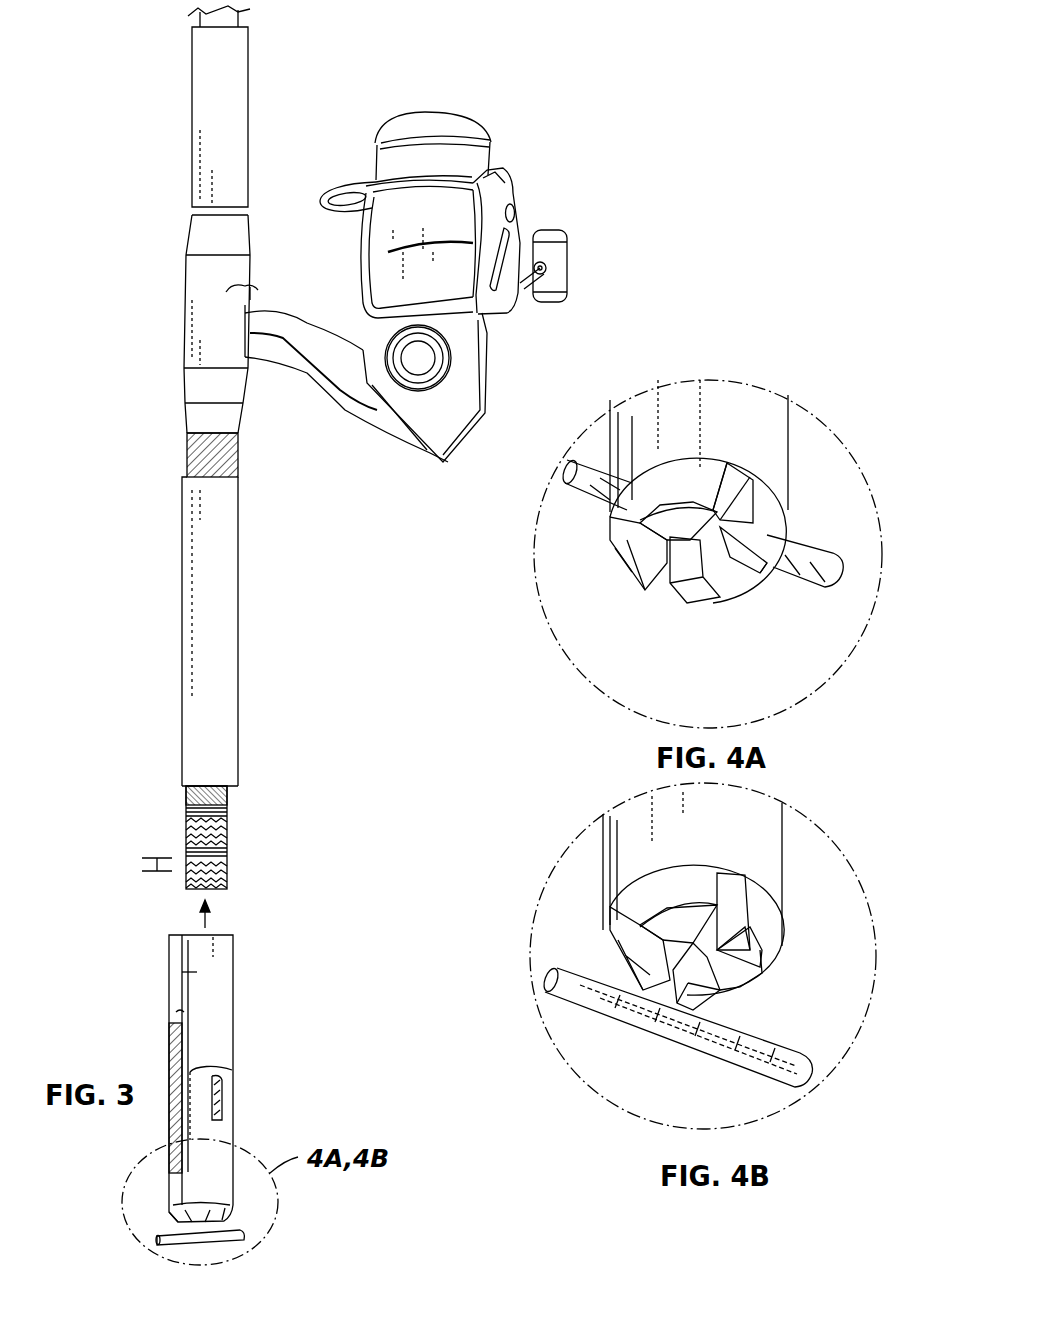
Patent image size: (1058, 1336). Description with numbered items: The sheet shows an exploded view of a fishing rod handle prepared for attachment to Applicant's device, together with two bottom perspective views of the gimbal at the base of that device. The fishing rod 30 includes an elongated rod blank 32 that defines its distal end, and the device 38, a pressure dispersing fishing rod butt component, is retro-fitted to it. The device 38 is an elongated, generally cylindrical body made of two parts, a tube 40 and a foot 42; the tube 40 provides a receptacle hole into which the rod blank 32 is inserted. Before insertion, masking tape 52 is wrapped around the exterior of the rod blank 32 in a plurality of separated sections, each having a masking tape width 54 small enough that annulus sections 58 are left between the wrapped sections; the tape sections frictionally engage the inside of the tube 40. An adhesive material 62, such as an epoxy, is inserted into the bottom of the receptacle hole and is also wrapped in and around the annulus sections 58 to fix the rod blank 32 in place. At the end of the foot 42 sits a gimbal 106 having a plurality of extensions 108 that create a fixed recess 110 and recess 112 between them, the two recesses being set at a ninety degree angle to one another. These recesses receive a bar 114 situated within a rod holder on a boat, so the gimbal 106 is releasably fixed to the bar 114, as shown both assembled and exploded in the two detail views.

In FIG. 3, the fishing rod 30 is at (311, 418).
In FIG. 3, the rod blank 32 is at (192, 816).
In FIG. 3, the device 38 is at (201, 1078).
In FIG. 3, the tube 40 is at (197, 972).
In FIG. 3, the foot 42 is at (230, 1127).
In FIG. 3, the masking tape 52 is at (229, 812).
In FIG. 3, the masking tape width 54 is at (142, 862).
In FIG. 3, the annulus sections 58 is at (230, 795).
In FIG. 3, the adhesive material 62 is at (184, 830).
In FIG. 3, the gimbal 106 is at (230, 1207).
In FIG. 4A, the gimbal 106 is at (608, 570).
In FIG. 4B, the gimbal 106 is at (592, 918).
In FIG. 4A, the extensions 108 is at (688, 478).
In FIG. 4B, the extensions 108 is at (685, 882).
In FIG. 4A, the recess 110 is at (733, 482).
In FIG. 4A, the recess 112 is at (767, 580).
In FIG. 4B, the bar 114 is at (804, 1081).